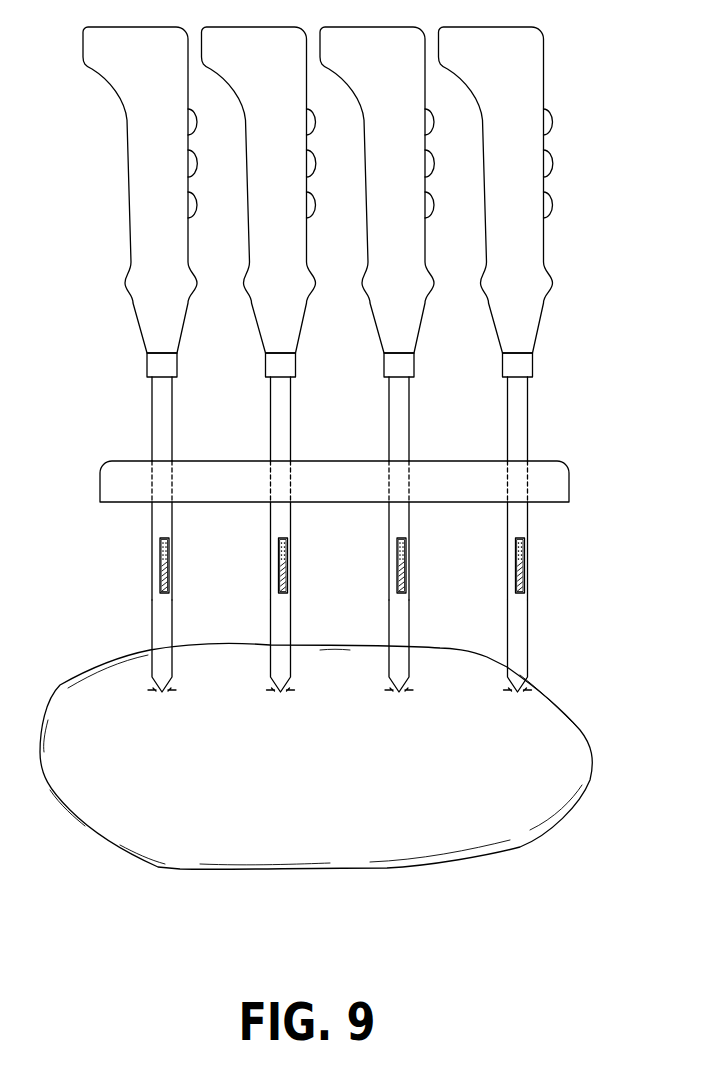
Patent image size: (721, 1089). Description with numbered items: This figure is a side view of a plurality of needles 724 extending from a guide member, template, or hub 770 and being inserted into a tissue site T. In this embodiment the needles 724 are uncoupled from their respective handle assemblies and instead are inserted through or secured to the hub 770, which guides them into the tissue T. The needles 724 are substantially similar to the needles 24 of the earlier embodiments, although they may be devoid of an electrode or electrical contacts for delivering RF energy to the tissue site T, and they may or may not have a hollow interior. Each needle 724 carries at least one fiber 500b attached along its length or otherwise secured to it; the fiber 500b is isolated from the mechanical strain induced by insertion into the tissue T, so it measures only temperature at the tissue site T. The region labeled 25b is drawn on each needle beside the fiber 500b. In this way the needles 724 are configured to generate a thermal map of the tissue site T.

The hub 770 is at (543, 461).
The needles 24 is at (152, 544).
The fiber 500b is at (263, 565).
The hatched window portion 25b is at (163, 578).
The needles 724 is at (260, 607).
The tissue site T is at (567, 715).